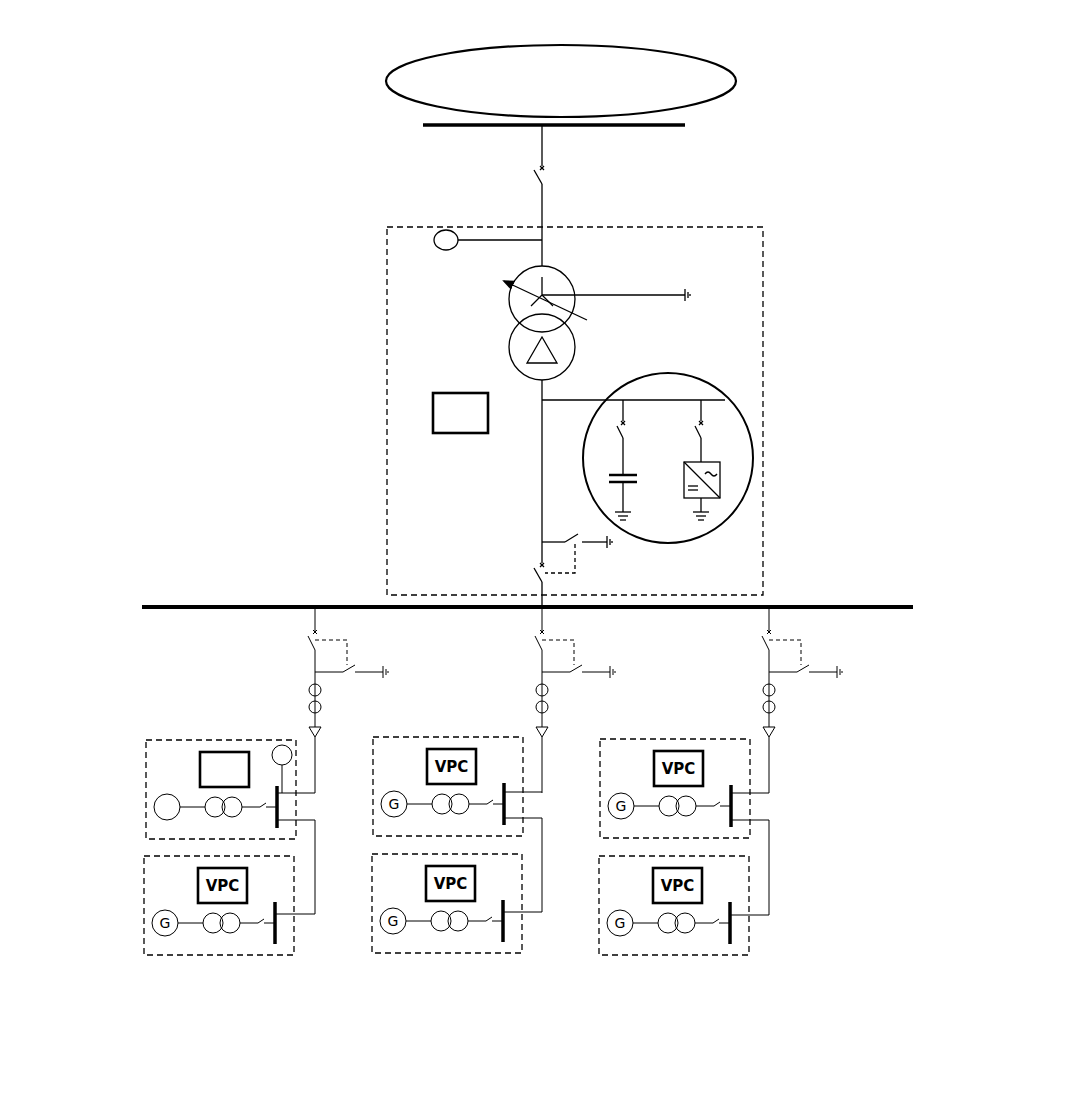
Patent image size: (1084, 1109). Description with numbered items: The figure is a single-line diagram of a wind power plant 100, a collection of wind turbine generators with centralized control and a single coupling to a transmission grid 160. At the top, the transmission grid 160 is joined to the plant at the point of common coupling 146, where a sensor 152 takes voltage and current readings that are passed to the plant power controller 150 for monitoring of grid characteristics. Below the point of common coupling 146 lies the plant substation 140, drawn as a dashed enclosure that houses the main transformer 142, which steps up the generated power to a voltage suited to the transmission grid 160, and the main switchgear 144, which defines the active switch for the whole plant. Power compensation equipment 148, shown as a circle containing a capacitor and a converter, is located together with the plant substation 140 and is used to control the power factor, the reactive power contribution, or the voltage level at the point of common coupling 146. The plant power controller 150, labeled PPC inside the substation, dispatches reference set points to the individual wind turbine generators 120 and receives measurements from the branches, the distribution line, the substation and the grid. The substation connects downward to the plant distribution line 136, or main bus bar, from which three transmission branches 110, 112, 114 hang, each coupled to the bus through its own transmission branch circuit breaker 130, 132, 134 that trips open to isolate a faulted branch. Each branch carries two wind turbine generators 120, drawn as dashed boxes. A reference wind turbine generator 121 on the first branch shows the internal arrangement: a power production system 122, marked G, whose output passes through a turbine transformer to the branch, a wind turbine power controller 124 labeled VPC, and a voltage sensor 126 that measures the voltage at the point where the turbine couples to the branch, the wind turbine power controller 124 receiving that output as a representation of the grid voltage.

The wind power plant 100 is at (225, 272).
The transmission branch 110 is at (140, 667).
The transmission branch 112 is at (450, 722).
The transmission branch 114 is at (670, 727).
The wind turbine generator 120 is at (419, 978).
The wind turbine generator 121 is at (173, 781).
The power production system 122 is at (139, 770).
The wind turbine power controller 124 is at (198, 737).
The voltage sensor 126 is at (255, 736).
The transmission branch circuit breaker 130 is at (320, 652).
The transmission branch circuit breaker 132 is at (542, 657).
The transmission branch circuit breaker 134 is at (769, 655).
The plant distribution line 136 is at (552, 606).
The plant substation 140 is at (743, 255).
The main transformer 142 is at (510, 312).
The main switchgear 144 is at (542, 561).
The point of common coupling 146 is at (657, 128).
The power compensation equipment 148 is at (740, 407).
The plant power controller 150 is at (433, 415).
The sensor 152 is at (443, 228).
The transmission grid 160 is at (718, 77).